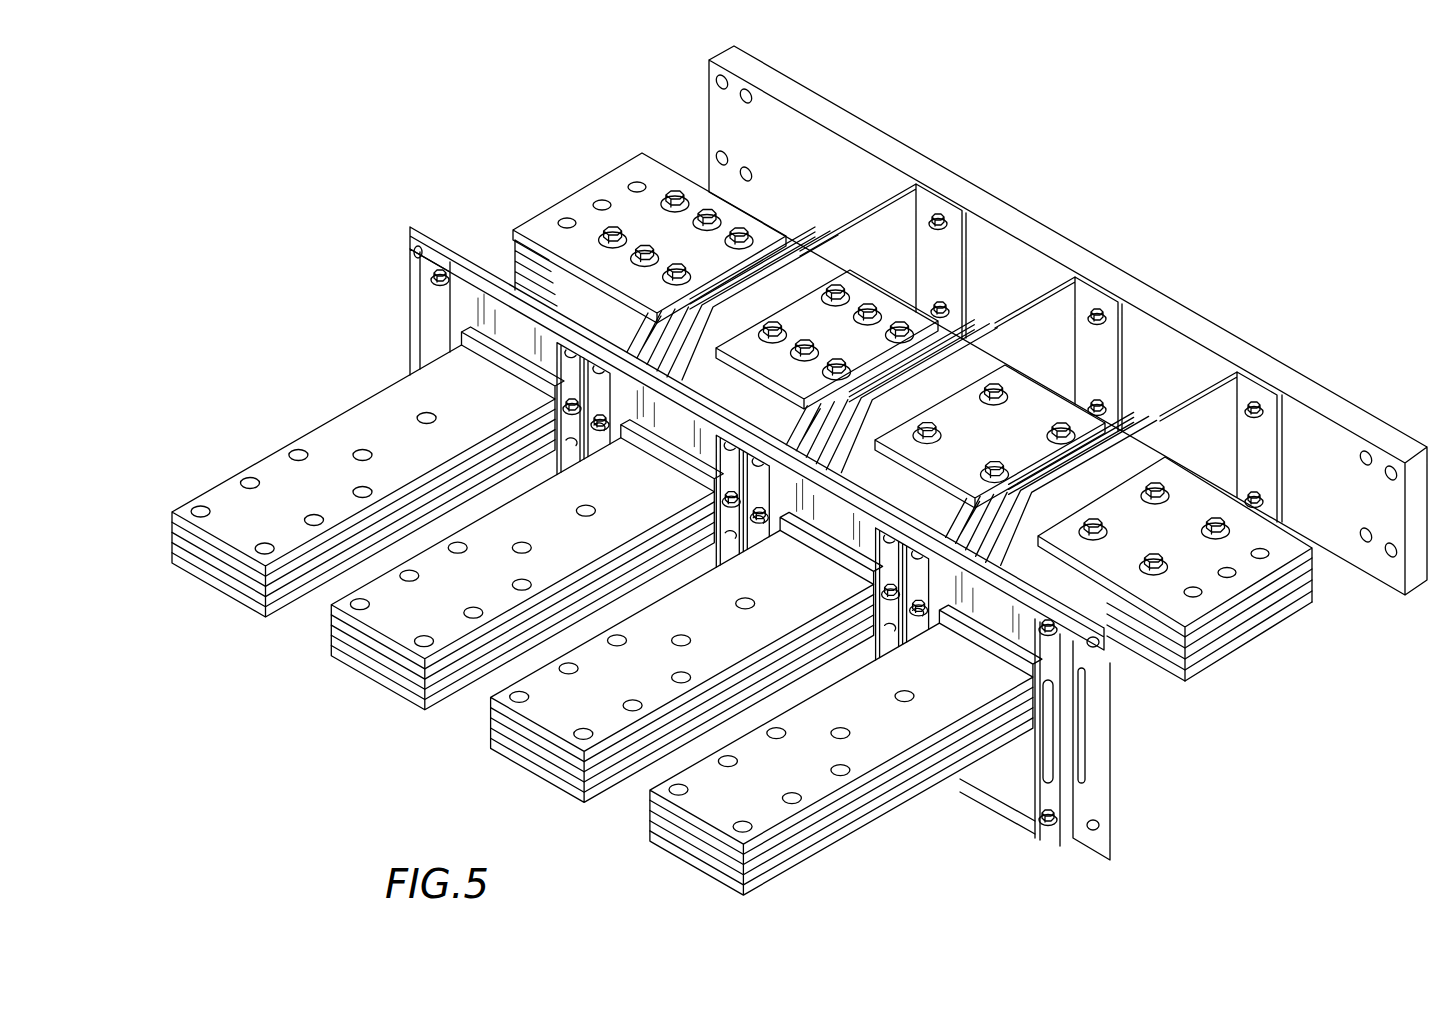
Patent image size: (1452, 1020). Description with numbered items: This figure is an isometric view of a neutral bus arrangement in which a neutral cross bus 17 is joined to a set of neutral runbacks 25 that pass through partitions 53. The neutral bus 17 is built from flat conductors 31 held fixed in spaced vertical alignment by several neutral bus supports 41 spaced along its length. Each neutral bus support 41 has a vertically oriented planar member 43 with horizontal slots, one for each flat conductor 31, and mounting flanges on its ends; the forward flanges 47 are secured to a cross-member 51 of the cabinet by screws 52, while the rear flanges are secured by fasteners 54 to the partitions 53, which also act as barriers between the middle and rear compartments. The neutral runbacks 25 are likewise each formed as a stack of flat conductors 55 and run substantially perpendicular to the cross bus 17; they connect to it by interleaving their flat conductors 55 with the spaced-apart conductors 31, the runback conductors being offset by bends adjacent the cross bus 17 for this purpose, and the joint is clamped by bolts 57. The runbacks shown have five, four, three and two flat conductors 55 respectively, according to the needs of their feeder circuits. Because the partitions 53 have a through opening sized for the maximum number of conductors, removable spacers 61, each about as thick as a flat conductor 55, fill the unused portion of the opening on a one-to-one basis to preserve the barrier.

The neutral bus 17 is at (924, 426).
The neutral runbacks 25 is at (222, 612).
The flat conductors 31 is at (1242, 634).
The neutral bus supports 41 is at (1163, 397).
The planar member 43 is at (1213, 398).
The forward flanges 47 is at (1267, 466).
The cross-member 51 is at (1352, 427).
The screws 52 is at (1252, 496).
The partitions 53 is at (478, 290).
The fasteners 54 is at (1045, 632).
The flat conductors 55 is at (312, 560).
The bolts 57 is at (745, 233).
The removable spacers 61 is at (1016, 735).